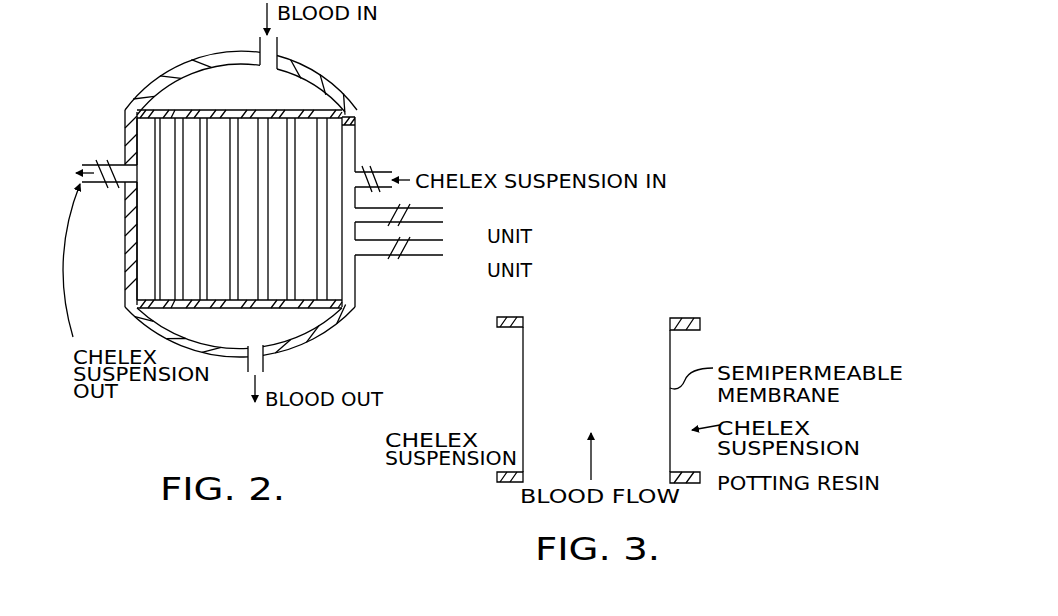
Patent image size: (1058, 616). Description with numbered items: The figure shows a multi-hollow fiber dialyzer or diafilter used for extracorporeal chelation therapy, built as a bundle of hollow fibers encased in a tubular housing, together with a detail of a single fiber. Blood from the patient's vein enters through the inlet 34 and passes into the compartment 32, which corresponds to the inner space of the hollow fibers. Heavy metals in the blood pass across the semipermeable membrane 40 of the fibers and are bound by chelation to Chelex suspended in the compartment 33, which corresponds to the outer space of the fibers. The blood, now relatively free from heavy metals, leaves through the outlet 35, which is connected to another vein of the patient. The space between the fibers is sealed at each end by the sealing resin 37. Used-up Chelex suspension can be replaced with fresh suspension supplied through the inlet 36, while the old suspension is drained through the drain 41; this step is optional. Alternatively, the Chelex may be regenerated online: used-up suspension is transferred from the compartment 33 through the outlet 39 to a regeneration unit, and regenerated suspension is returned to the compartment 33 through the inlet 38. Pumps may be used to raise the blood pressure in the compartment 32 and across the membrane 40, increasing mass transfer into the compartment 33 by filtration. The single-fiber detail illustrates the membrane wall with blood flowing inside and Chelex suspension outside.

In FIG. 2, the compartment 32 is at (290, 130).
In FIG. 3, the compartment 32 is at (615, 327).
In FIG. 2, the compartment 33 is at (333, 157).
In FIG. 3, the compartment 33 is at (692, 350).
In FIG. 2, the inlet 34 is at (286, 46).
In FIG. 2, the outlet 35 is at (270, 368).
In FIG. 2, the inlet 36 is at (382, 171).
In FIG. 2, the sealing resin 37 is at (311, 295).
In FIG. 3, the sealing resin 37 is at (678, 477).
In FIG. 2, the inlet 38 is at (559, 218).
In FIG. 2, the outlet 39 is at (551, 251).
In FIG. 2, the semipermeable membrane 40 is at (332, 136).
In FIG. 2, the drain 41 is at (106, 154).